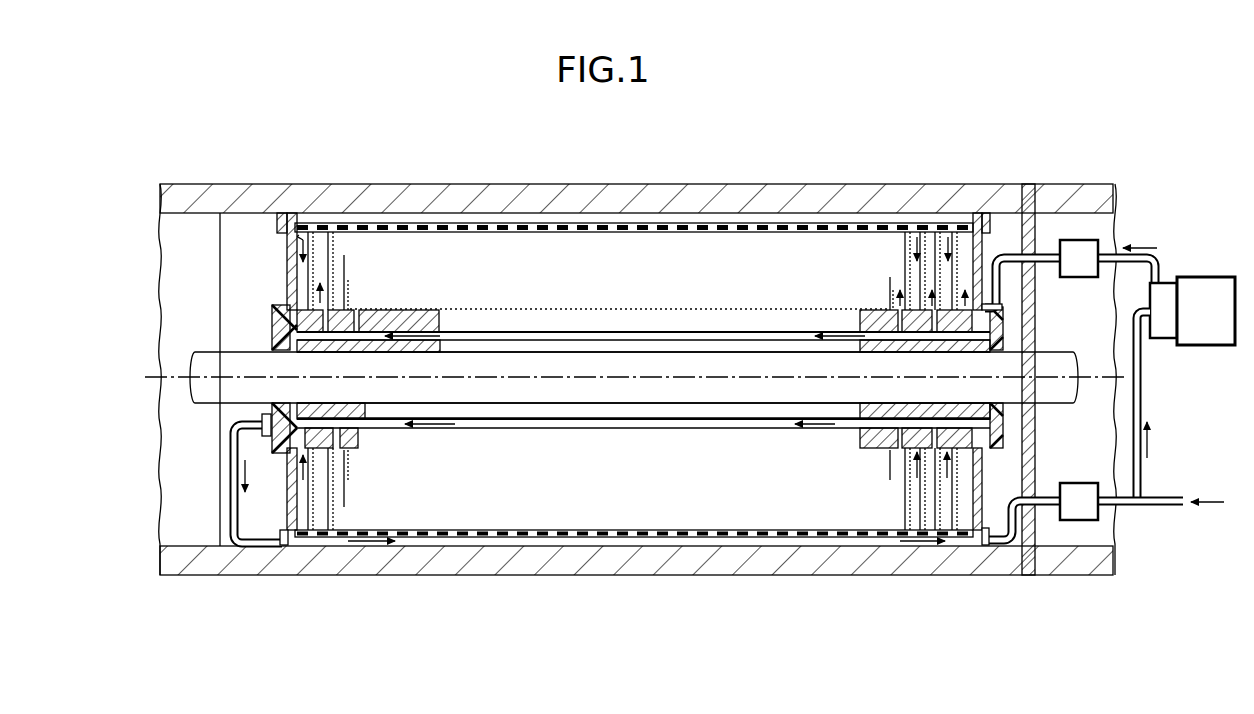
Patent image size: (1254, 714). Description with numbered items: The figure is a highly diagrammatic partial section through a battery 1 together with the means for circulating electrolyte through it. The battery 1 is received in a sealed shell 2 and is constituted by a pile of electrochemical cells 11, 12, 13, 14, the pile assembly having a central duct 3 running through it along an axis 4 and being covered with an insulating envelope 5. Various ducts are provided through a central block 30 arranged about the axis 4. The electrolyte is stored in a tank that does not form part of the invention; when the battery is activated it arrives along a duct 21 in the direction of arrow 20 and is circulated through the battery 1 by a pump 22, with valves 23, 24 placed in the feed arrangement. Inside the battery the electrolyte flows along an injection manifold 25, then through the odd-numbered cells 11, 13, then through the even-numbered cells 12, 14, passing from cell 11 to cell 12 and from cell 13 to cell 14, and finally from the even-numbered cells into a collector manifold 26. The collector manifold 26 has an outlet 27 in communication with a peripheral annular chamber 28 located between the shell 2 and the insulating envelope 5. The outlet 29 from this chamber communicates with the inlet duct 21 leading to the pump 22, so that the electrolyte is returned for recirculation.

The battery 1 is at (635, 375).
The sealed shell 2 is at (413, 564).
The central duct 3 is at (812, 385).
The axis 4 is at (752, 375).
The insulating envelope 5 is at (360, 223).
The electrochemical cell 11 is at (968, 232).
The electrochemical cell 12 is at (944, 230).
The electrochemical cell 13 is at (929, 230).
The electrochemical cell 14 is at (912, 230).
The arrow 20 is at (1222, 503).
The duct 21 is at (1137, 472).
The pump 22 is at (1207, 292).
The valve 23 is at (1079, 248).
The valve 24 is at (1084, 490).
The injection manifold 25 is at (418, 340).
The collector manifold 26 is at (405, 428).
The outlet 27 is at (286, 546).
The peripheral annular chamber 28 is at (556, 540).
The outlet 29 is at (993, 546).
The central block 30 is at (643, 305).